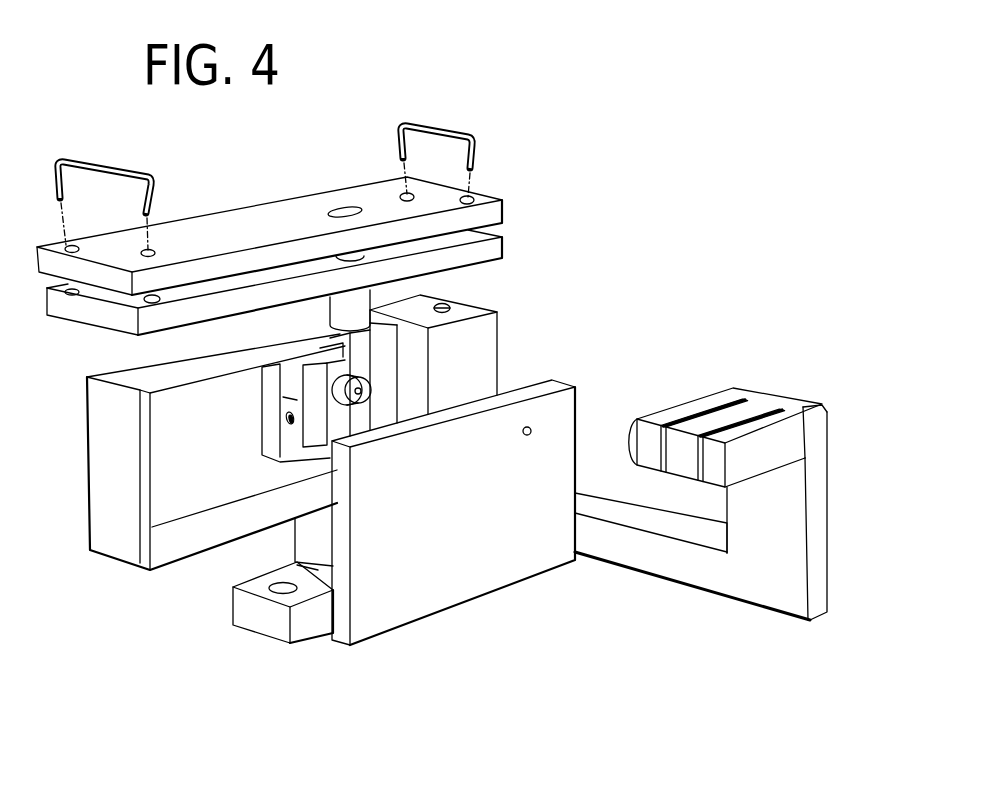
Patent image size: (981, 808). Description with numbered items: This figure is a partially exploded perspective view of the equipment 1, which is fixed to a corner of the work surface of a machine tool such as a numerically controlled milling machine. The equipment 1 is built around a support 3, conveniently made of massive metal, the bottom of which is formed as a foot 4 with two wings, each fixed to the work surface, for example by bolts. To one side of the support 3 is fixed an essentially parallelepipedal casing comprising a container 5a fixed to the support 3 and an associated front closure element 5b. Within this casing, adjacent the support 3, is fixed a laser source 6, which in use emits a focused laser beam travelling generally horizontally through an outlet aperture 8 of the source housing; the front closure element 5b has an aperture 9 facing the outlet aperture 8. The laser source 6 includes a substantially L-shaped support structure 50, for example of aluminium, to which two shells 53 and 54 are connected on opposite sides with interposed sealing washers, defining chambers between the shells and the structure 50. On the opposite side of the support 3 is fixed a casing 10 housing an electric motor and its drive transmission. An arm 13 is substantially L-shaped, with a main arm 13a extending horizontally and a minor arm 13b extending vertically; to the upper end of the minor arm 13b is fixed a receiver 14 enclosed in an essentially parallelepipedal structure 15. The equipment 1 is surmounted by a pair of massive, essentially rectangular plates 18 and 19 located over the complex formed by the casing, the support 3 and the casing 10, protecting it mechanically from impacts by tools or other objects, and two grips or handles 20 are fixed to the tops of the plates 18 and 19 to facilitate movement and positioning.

The equipment 1 is at (548, 166).
The support 3 is at (383, 369).
The foot 4 is at (282, 627).
The container 5a is at (108, 446).
The front closure element 5b is at (488, 578).
The laser source 6 is at (214, 452).
The outlet aperture 8 is at (359, 393).
The aperture 9 is at (531, 428).
The casing 10 is at (487, 327).
The arm 13 is at (685, 558).
The main arm 13a is at (614, 553).
The minor arm 13b is at (792, 551).
The receiver 14 is at (718, 371).
The structure 15 is at (740, 416).
The plate 18 is at (295, 215).
The plate 19 is at (62, 308).
The grips or handles 20 is at (83, 167).
The support structure 50 is at (293, 447).
The shell 53 is at (268, 404).
The shell 54 is at (320, 448).